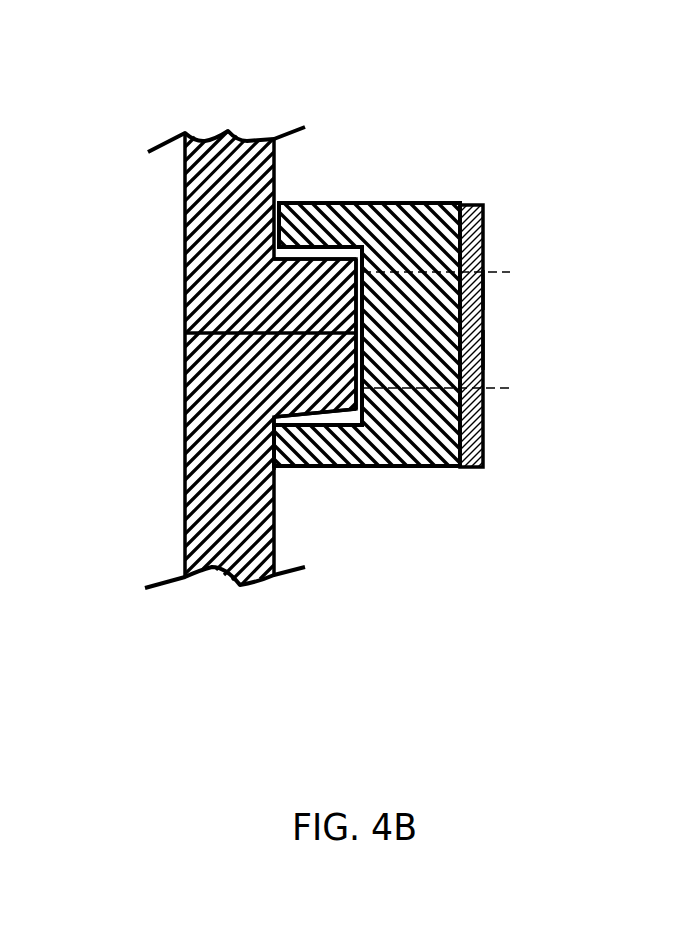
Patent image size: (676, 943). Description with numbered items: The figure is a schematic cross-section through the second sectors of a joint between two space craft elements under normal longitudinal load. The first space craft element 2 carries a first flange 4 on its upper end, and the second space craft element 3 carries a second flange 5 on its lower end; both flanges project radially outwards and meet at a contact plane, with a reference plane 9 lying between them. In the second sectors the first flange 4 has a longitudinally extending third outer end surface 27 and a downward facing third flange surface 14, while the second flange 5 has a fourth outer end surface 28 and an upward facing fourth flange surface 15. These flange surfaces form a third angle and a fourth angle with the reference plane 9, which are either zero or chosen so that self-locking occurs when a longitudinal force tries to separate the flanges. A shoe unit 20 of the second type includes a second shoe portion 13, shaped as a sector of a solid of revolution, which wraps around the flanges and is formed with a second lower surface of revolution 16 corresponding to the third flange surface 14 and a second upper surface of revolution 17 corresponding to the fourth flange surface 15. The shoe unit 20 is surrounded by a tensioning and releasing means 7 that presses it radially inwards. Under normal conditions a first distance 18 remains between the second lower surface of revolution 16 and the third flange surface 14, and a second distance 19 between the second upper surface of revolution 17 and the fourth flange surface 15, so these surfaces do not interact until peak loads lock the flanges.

The first space craft element 2 is at (192, 506).
The second space craft element 3 is at (197, 205).
The first flange 4 is at (275, 378).
The second flange 5 is at (360, 302).
The tensioning and releasing means 7 is at (488, 207).
The reference plane 9 is at (190, 333).
The second shoe portion 13 is at (432, 205).
The third flange surface 14 is at (272, 418).
The fourth flange surface 15 is at (270, 260).
The second lower surface of revolution 16 is at (338, 435).
The second upper surface of revolution 17 is at (322, 243).
The first distance 18 is at (352, 428).
The second distance 19 is at (348, 255).
The shoe unit 20 is at (455, 462).
The third outer end surface 27 is at (445, 346).
The fourth outer end surface 28 is at (362, 300).